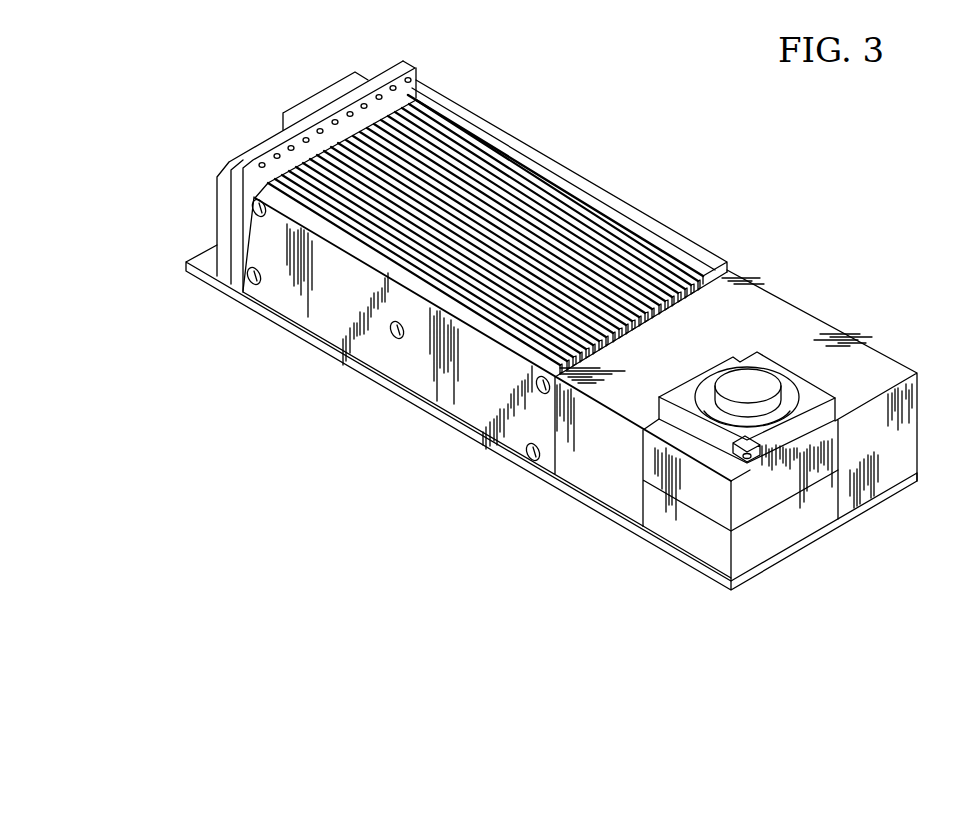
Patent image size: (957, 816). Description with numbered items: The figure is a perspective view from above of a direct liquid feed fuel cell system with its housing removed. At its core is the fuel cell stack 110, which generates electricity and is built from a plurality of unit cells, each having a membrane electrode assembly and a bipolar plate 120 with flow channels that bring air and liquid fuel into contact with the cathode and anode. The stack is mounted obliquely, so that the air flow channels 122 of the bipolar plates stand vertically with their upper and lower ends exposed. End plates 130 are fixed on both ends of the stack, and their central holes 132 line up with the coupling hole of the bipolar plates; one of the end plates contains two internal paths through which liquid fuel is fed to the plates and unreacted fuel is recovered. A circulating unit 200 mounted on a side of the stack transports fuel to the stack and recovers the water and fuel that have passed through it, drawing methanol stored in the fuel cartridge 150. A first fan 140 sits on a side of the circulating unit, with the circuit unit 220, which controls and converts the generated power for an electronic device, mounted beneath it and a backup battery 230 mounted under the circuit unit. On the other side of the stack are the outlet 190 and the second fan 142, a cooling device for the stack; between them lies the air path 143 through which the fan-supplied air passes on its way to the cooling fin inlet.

The fuel cell stack 110 is at (280, 294).
The bipolar plate 120 is at (600, 216).
The air flow channels 122 is at (548, 165).
The end plates 130 is at (260, 245).
The central holes 132 is at (396, 336).
The first fan 140 is at (773, 358).
The second fan 142 is at (313, 93).
The air path 143 is at (233, 172).
The fuel cartridge 150 is at (880, 358).
The outlet 190 is at (235, 208).
The circulating unit 200 is at (598, 490).
The circuit unit 220 is at (670, 480).
The backup battery 230 is at (720, 557).